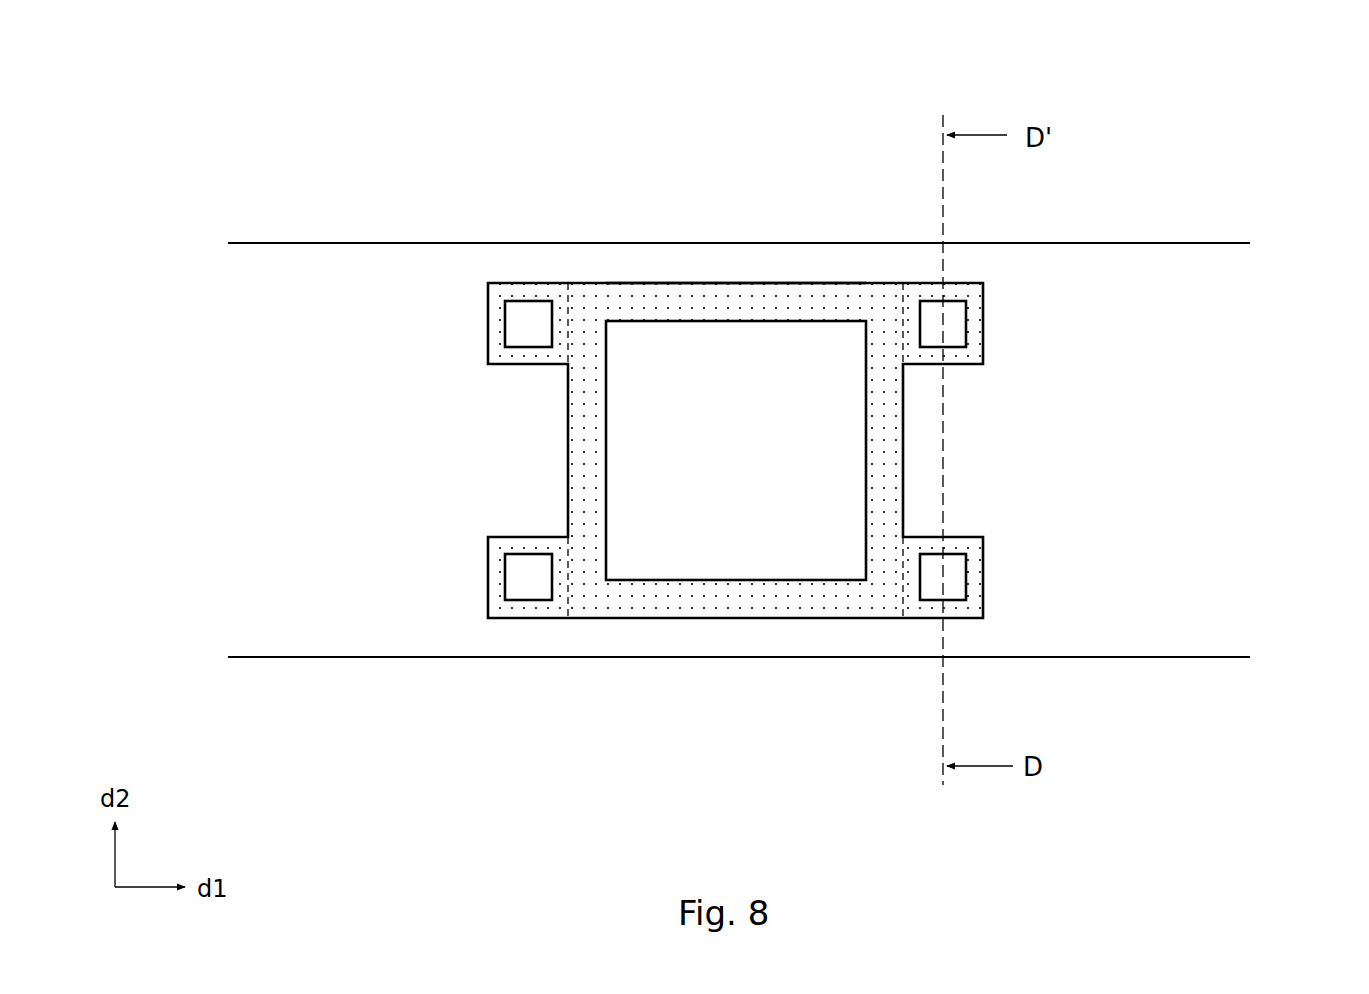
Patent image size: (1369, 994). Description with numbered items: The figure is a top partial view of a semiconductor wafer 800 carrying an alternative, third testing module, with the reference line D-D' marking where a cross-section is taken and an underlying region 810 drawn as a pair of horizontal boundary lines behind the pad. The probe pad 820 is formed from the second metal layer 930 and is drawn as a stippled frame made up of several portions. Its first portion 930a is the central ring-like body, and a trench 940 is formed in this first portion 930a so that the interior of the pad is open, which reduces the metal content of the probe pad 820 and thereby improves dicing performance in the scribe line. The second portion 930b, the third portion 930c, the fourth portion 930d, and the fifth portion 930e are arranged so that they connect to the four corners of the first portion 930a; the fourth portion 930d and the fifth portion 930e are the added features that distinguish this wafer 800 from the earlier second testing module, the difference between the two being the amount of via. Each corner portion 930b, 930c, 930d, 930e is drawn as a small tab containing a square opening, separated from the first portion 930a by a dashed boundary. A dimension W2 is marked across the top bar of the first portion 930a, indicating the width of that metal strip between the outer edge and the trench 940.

The semiconductor wafer 800 is at (201, 70).
The active region / fin structure 810 is at (238, 306).
The probe pad 820 is at (738, 393).
The second metal layer 930 is at (1300, 17).
The first portion 930a is at (731, 300).
The second portion 930b is at (985, 578).
The third portion 930c is at (985, 322).
The fourth portion 930d is at (488, 578).
The fifth portion 930e is at (488, 322).
The trench 940 is at (759, 468).
The width of gate segment W2 is at (633, 247).